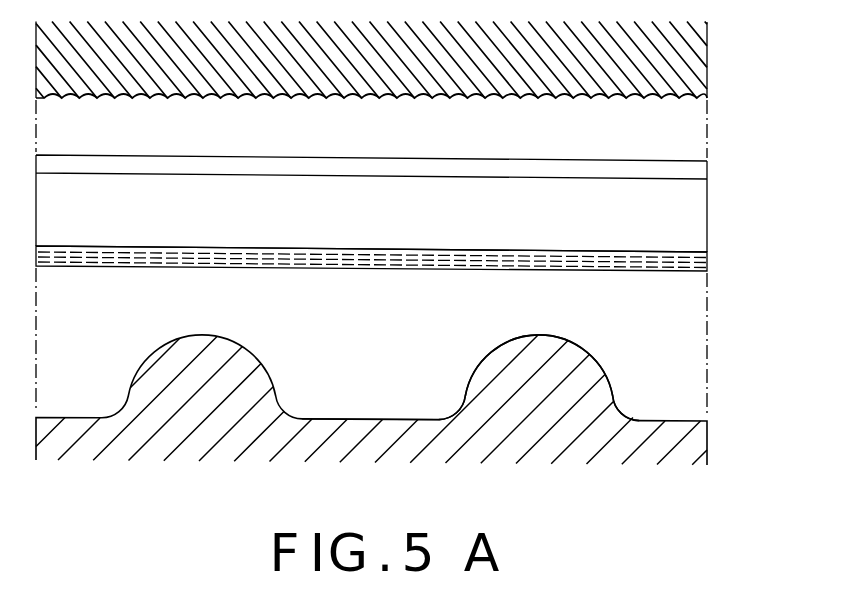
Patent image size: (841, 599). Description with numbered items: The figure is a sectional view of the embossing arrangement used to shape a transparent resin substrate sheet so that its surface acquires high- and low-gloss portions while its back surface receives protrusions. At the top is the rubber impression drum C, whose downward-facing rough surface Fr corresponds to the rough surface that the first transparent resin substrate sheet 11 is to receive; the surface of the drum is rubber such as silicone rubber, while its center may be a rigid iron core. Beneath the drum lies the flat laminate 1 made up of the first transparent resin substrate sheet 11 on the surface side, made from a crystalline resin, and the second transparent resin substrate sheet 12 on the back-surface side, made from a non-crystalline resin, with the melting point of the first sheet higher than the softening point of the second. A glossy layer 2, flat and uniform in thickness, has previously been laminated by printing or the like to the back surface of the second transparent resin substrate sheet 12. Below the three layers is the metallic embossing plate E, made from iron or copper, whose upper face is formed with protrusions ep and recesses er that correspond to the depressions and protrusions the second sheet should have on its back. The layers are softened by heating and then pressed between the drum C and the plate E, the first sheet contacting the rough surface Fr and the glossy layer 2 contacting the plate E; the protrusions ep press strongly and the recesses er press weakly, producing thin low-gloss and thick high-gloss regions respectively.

The rubber impression drum C is at (411, 67).
The rough surface Fr is at (690, 109).
The film (laminate) 1 is at (437, 196).
The first transparent resin substrate sheet 11 is at (707, 170).
The second transparent resin substrate sheet 12 is at (414, 212).
The glossy layer 2 is at (707, 263).
The metallic embossing plate E is at (404, 393).
The recess er is at (375, 383).
The protrusion ep is at (600, 363).